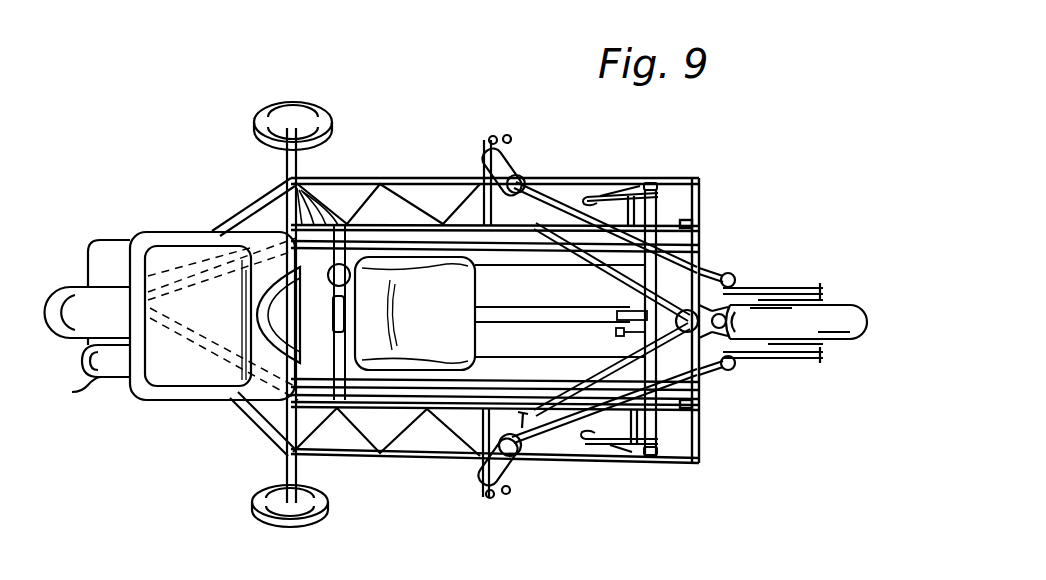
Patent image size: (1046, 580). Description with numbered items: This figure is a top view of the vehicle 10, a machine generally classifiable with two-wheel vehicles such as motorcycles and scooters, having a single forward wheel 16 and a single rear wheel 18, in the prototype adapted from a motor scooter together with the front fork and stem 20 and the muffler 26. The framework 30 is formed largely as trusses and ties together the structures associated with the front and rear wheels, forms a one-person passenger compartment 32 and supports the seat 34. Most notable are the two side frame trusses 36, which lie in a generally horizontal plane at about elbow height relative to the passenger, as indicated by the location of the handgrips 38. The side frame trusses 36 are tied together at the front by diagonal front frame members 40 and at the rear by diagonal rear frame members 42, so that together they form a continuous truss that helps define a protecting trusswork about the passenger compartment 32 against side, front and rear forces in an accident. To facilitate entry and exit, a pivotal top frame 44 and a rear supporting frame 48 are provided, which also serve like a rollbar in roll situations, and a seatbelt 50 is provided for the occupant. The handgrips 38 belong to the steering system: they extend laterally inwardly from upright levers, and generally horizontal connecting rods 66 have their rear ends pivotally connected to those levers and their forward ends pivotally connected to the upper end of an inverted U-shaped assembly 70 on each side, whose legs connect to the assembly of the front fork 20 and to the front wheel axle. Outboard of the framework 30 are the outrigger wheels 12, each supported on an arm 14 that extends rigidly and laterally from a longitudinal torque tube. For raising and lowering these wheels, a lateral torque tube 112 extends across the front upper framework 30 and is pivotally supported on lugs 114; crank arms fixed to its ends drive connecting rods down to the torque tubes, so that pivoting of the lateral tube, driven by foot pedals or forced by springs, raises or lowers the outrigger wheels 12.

The vehicle 10 is at (578, 164).
The outrigger wheels 12 is at (315, 108).
The arms 14 is at (312, 166).
The forward wheel 16 is at (852, 325).
The rear wheel 18 is at (53, 305).
The front fork and stem 20 is at (733, 320).
The muffler 26 is at (97, 385).
The framework 30 is at (700, 180).
The passenger compartment 32 is at (528, 304).
The seat 34 is at (431, 326).
The side frame trusses 36 is at (443, 192).
The handgrips 38 is at (527, 120).
The diagonal front frame members 40 is at (624, 277).
The diagonal rear frame members 42 is at (252, 203).
The pivotal top frame 44 is at (380, 222).
The rear supporting frame 48 is at (300, 208).
The seatbelt 50 is at (205, 290).
The connecting rods 66 is at (568, 205).
The inverted U-shaped assembly 70 is at (745, 292).
The lateral torque tube 112 is at (657, 423).
The lugs 114 is at (650, 185).